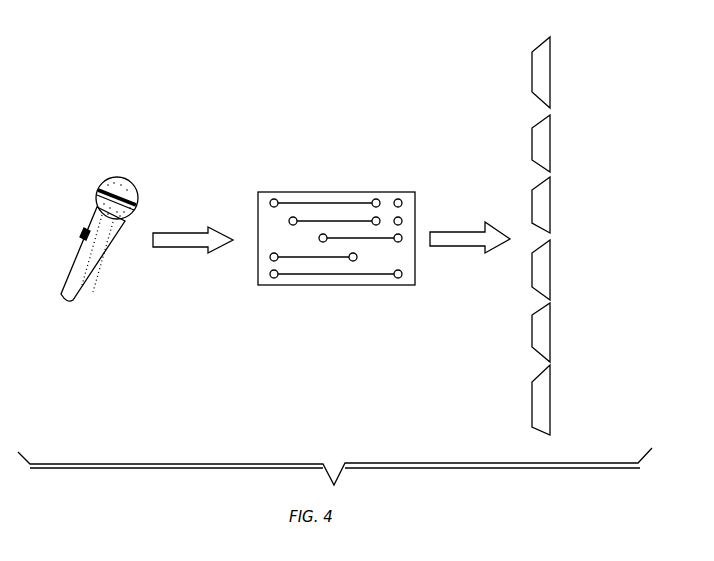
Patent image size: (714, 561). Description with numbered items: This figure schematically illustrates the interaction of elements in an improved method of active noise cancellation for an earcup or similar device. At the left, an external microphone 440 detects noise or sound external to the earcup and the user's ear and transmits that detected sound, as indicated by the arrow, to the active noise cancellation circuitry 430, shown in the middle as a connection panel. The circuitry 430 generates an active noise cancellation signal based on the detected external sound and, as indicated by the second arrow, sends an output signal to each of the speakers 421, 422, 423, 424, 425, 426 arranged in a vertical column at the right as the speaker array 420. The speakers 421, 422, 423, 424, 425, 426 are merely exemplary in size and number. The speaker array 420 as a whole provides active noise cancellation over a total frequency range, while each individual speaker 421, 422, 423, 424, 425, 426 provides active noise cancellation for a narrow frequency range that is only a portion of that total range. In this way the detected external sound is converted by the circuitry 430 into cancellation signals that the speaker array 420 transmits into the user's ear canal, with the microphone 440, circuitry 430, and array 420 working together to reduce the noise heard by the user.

The speaker array 420 is at (530, 231).
The speaker 421 is at (553, 67).
The speaker 422 is at (553, 394).
The speaker 423 is at (553, 136).
The speaker 424 is at (553, 199).
The speaker 425 is at (553, 266).
The speaker 426 is at (553, 327).
The active noise cancellation circuitry 430 is at (375, 192).
The external microphone 440 is at (137, 181).